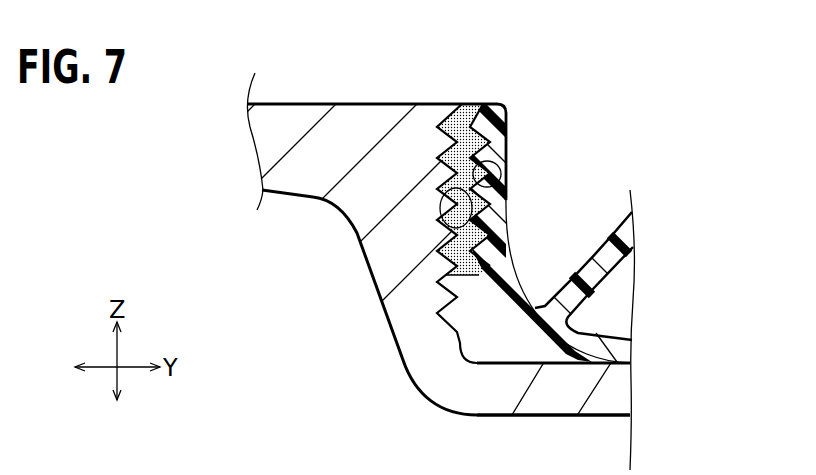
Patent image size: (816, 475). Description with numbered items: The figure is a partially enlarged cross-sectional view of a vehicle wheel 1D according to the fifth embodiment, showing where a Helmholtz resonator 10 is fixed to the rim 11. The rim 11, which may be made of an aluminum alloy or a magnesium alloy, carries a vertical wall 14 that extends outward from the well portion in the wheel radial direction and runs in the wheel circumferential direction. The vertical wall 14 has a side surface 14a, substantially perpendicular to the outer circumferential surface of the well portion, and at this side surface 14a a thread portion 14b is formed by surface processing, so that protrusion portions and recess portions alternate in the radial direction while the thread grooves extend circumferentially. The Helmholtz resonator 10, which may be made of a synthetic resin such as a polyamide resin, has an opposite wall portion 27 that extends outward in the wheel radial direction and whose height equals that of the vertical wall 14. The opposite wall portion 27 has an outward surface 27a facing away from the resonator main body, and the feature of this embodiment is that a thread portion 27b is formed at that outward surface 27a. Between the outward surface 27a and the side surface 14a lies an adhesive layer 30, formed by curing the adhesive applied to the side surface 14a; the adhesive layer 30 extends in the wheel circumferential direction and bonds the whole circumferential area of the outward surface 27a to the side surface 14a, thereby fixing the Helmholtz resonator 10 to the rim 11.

The vehicle wheel 1D is at (595, 81).
The Helmholtz resonator 10 is at (659, 123).
The rim 11 is at (542, 400).
The vertical wall 14 is at (373, 130).
The side surface 14a is at (354, 233).
The thread portion 14b is at (441, 224).
The opposite wall portion 27 is at (507, 127).
The outward surface 27a is at (545, 259).
The thread portion 27b is at (502, 177).
The adhesive layer 30 is at (470, 103).